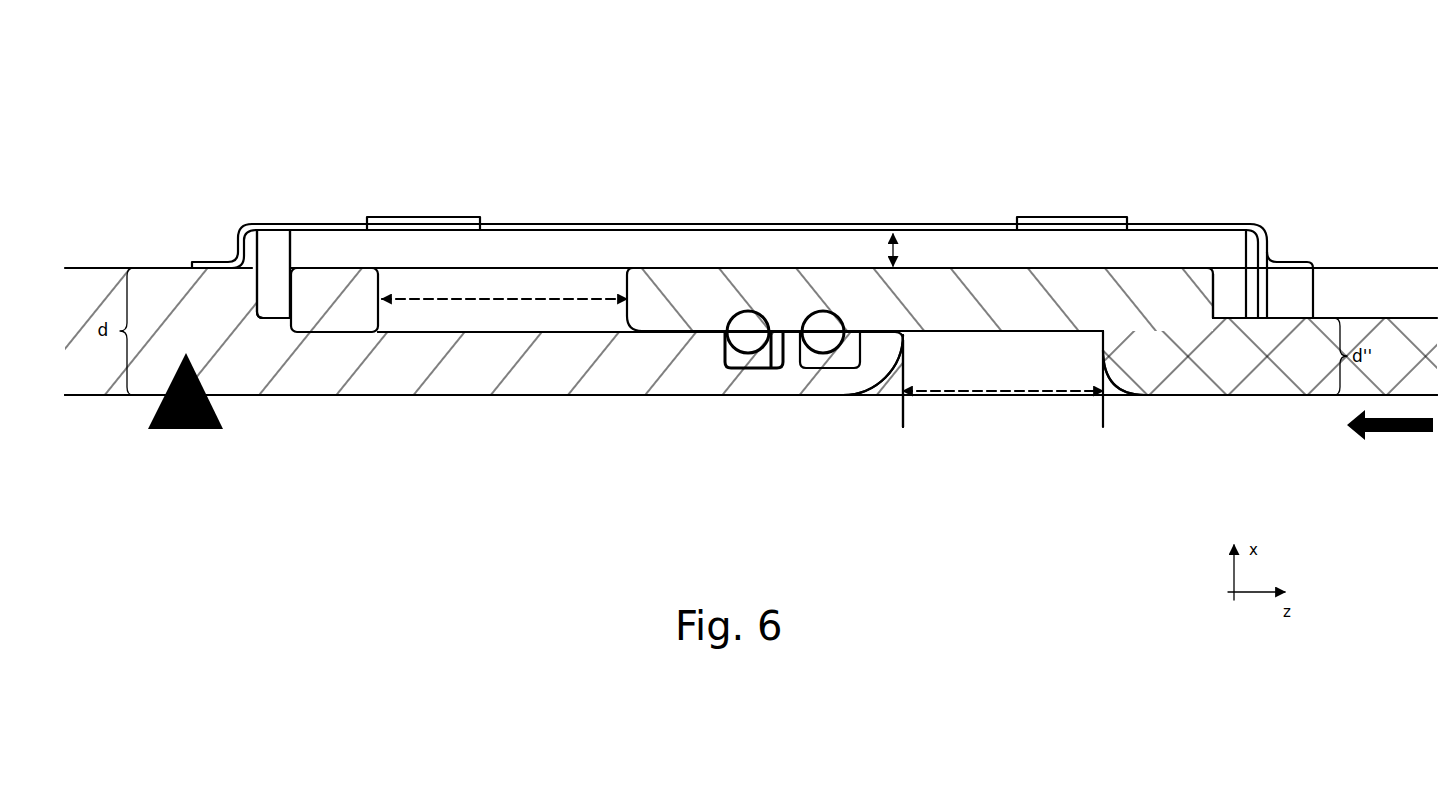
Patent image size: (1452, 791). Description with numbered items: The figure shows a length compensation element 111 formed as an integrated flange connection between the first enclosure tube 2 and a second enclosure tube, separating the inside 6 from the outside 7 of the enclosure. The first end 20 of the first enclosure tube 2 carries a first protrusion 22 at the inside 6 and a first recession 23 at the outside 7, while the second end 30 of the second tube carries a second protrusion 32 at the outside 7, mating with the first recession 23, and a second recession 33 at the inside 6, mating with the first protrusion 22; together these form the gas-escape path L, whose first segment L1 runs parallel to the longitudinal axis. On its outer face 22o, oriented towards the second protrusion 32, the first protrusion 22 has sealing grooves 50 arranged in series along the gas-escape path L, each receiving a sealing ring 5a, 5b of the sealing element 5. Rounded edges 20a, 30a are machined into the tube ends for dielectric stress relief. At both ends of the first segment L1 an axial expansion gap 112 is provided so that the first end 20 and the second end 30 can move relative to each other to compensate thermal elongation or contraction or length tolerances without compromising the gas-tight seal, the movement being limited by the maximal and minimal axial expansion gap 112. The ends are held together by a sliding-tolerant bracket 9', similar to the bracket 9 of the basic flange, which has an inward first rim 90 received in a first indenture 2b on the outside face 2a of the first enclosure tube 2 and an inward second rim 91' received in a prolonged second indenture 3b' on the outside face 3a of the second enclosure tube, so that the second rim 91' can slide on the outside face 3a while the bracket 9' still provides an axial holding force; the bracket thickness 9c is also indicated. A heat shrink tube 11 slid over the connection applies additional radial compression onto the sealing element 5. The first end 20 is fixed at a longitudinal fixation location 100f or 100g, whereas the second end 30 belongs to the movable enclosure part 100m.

The first enclosure tube 2 is at (305, 372).
The outside face of first enclosure tube 2a is at (155, 266).
The first indenture 2b is at (292, 320).
The outside face of second enclosure tube 3a is at (1370, 300).
The second indenture 3b' is at (1132, 381).
The sealing element 5 is at (776, 399).
The first sealing ring 5a is at (748, 340).
The second sealing ring 5b is at (823, 340).
The inside of the enclosure tubes 6 is at (81, 444).
The outside of the enclosure tubes 7 is at (75, 242).
The bracket 9 is at (847, 189).
The sliding-tolerant bracket 9' is at (998, 200).
The bracket thickness 9c is at (903, 235).
The heat shrink tube 11 is at (847, 228).
The first end of first enclosure tube 20 is at (336, 398).
The rounded edge 20a is at (893, 378).
The first protrusion 22 is at (640, 397).
The outer face of first protrusion 22o is at (682, 328).
The first recession 23 is at (590, 310).
The second end of second enclosure tube 30 is at (1270, 403).
The rounded edge 30a is at (1122, 380).
The second protrusion 32 is at (655, 290).
The second recession 33 is at (963, 370).
The sealing groove 50 is at (800, 370).
The first rim of bracket 90 is at (337, 312).
The sliding rim of bracket 91' is at (1212, 403).
The first longitudinal fixation position 100f is at (185, 432).
The second longitudinal fixation position 100g is at (192, 432).
The movable enclosure part 100m is at (1305, 397).
The length compensation element 111 is at (243, 178).
The axial expansion gap 112 is at (515, 300).
The gas-escape path L is at (772, 283).
The first segment of gas-escape path L1 is at (785, 323).